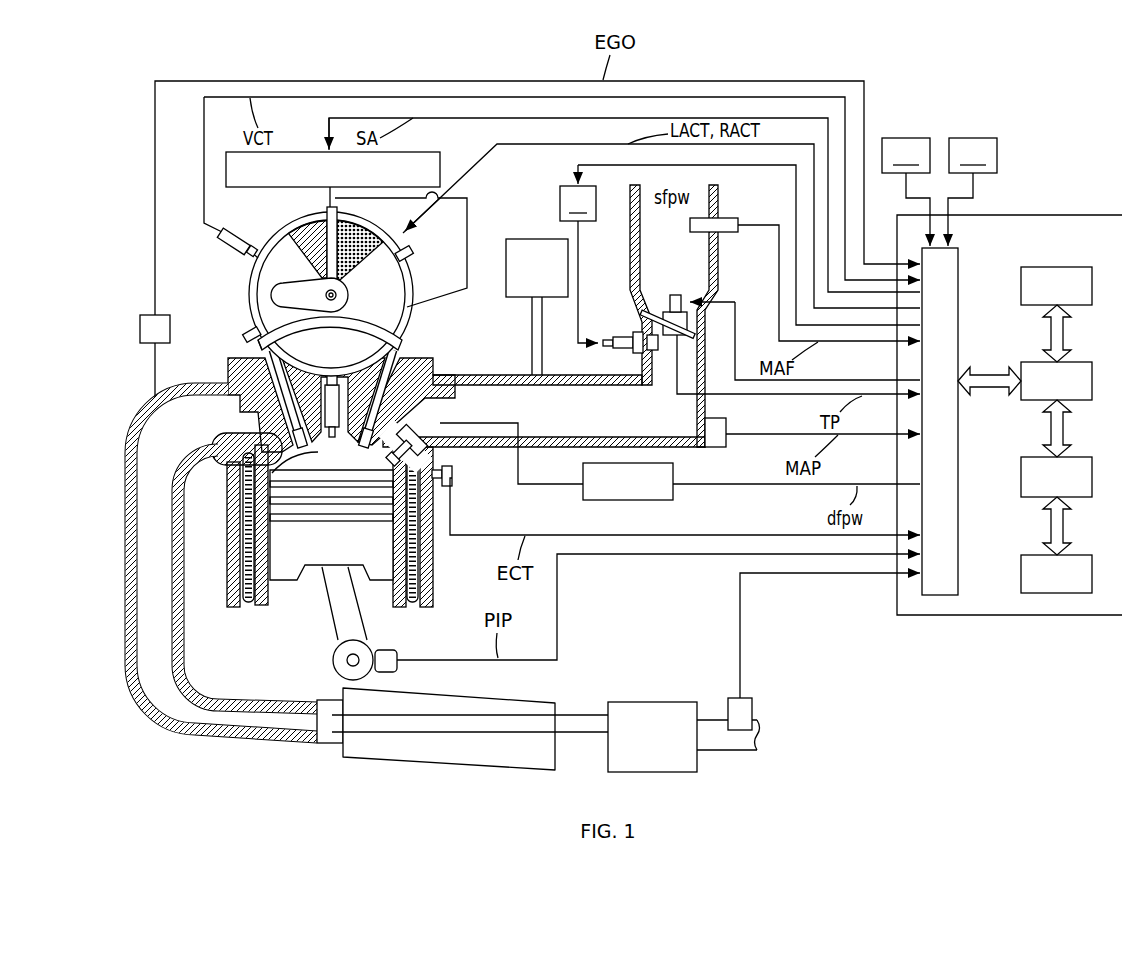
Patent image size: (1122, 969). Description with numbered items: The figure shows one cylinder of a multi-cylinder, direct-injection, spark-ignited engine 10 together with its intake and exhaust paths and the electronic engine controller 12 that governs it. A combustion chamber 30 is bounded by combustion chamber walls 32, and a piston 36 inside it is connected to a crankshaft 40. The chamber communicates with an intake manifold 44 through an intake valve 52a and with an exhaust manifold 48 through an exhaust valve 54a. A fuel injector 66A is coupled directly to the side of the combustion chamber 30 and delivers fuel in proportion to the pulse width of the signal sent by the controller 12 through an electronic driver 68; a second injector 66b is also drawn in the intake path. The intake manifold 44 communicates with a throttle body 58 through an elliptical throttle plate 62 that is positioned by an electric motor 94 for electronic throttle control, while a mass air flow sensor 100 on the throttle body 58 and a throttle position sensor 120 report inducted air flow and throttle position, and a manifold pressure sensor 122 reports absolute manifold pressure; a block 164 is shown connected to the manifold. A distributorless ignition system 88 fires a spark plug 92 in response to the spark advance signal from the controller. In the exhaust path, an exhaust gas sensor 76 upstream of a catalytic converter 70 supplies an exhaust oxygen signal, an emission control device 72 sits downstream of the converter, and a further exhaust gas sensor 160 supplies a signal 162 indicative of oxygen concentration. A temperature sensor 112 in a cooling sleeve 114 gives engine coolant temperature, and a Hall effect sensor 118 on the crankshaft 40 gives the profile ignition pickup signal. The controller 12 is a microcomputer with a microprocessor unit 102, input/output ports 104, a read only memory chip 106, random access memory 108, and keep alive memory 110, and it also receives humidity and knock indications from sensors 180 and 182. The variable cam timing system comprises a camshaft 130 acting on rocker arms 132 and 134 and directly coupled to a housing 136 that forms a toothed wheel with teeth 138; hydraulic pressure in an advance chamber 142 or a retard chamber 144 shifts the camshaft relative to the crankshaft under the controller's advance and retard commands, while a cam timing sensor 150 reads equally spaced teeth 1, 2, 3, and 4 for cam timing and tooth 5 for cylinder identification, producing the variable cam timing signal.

The tooth 1 is at (325, 212).
The tooth 2 is at (413, 265).
The tooth 3 is at (333, 389).
The tooth 4 is at (250, 333).
The tooth 5 is at (248, 258).
The engine 10 is at (470, 300).
The electronic engine controller 12 is at (1009, 390).
The combustion chamber 30 is at (310, 455).
The combustion chamber walls 32 is at (272, 607).
The piston 36 is at (320, 543).
The crankshaft 40 is at (343, 663).
The intake manifold 44 is at (592, 420).
The exhaust manifold 48 is at (133, 483).
The intake valve 52a is at (400, 423).
The exhaust valve 54a is at (287, 425).
The throttle body 58 is at (673, 338).
The throttle plate 62 is at (759, 321).
The fuel injector 66A is at (440, 432).
The port fuel injector 66b is at (605, 346).
The electronic driver 68 is at (673, 472).
The catalytic converter 70 is at (545, 698).
The emission control device 72 is at (640, 702).
The exhaust gas sensor 76 is at (150, 312).
The distributorless ignition system 88 is at (443, 160).
The spark plug 92 is at (328, 378).
The electric motor 94 is at (680, 295).
The mass air flow sensor 100 is at (720, 218).
The microprocessor unit 102 is at (1085, 362).
The input/output ports 104 is at (958, 270).
The read only memory chip 106 is at (1085, 267).
The random access memory 108 is at (1085, 457).
The keep alive memory 110 is at (1085, 555).
The temperature sensor 112 is at (452, 472).
The cooling sleeve 114 is at (417, 566).
The Hall effect sensor 118 is at (397, 655).
The throttle position sensor 120 is at (668, 330).
The manifold pressure sensor 122 is at (727, 425).
The camshaft 130 is at (303, 294).
The rocker arm 132 is at (260, 350).
The rocker arm 134 is at (400, 348).
The housing 136 is at (249, 300).
The teeth 138 is at (410, 252).
The advance chamber 142 is at (360, 232).
The retard chamber 144 is at (293, 233).
The cam timing sensor 150 is at (222, 246).
The exhaust gas sensor 160 is at (824, 651).
The signal 162 is at (835, 575).
The module 164 is at (537, 239).
The humidity sensor 180 is at (906, 192).
The knock sensor 182 is at (972, 192).